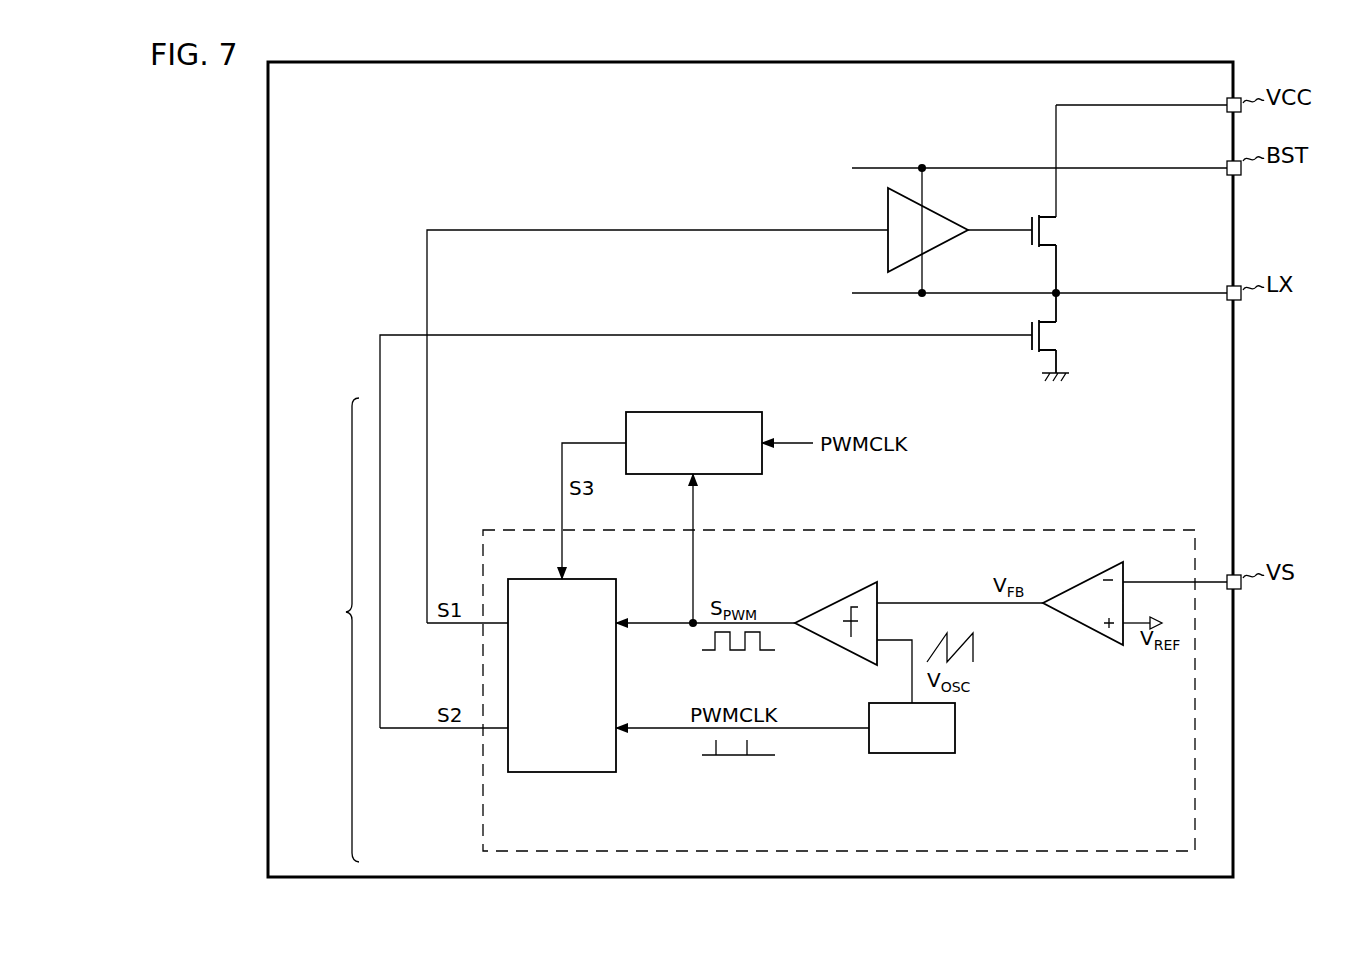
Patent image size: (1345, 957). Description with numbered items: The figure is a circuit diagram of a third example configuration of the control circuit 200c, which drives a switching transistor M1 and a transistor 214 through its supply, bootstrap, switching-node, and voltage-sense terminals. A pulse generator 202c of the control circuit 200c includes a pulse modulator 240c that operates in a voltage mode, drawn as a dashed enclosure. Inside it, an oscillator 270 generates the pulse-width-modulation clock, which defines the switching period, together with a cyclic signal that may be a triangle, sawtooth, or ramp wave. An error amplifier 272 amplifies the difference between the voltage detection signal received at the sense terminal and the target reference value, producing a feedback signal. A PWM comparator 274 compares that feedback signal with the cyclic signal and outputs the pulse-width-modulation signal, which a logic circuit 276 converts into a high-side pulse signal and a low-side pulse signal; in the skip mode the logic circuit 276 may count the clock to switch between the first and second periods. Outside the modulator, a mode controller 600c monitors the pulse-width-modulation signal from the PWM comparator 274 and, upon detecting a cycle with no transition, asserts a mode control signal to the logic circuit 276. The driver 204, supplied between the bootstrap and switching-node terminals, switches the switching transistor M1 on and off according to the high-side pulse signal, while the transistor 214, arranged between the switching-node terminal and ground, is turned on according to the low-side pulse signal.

The control circuit 200c is at (268, 749).
The pulse generator 202c is at (321, 630).
The driver 204 is at (933, 208).
The switching transistor M1 is at (1062, 231).
The transistor 214 is at (1062, 331).
The mode controller 600c is at (668, 412).
The pulse modulator 240c is at (484, 813).
The logic circuit 276 is at (568, 775).
The PWM comparator 274 is at (822, 606).
The error amplifier 272 is at (1071, 622).
The oscillator 270 is at (927, 756).